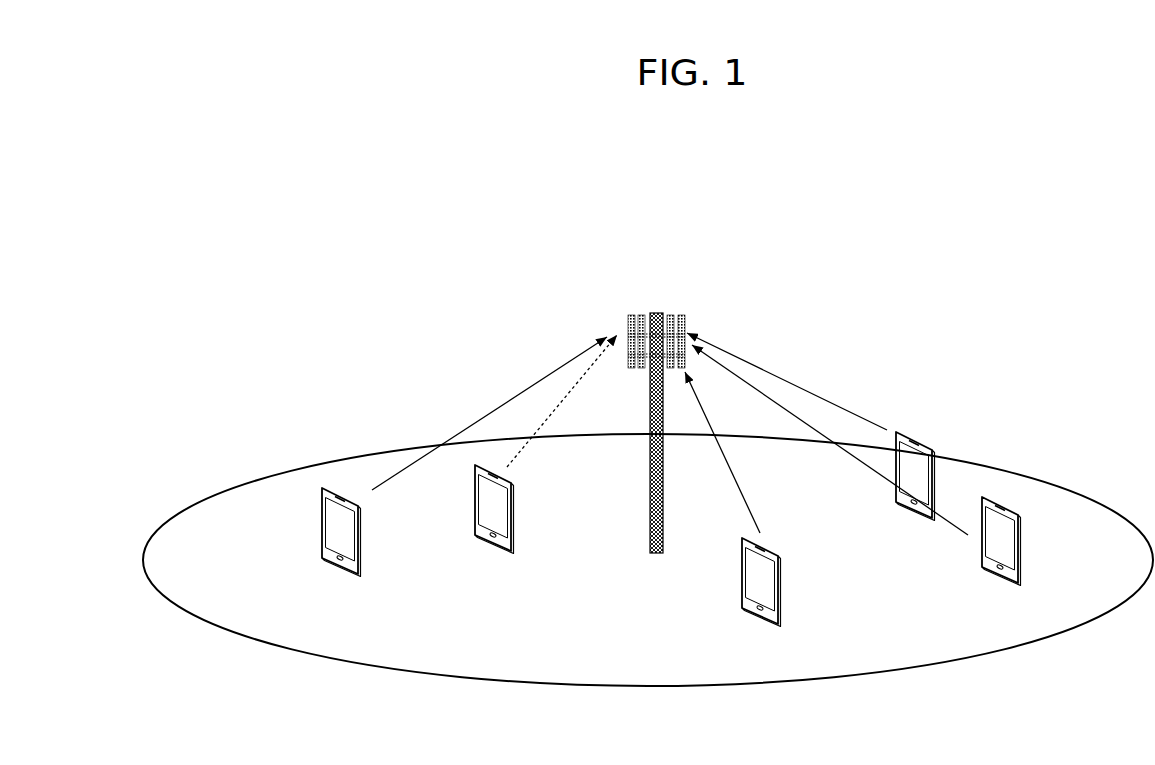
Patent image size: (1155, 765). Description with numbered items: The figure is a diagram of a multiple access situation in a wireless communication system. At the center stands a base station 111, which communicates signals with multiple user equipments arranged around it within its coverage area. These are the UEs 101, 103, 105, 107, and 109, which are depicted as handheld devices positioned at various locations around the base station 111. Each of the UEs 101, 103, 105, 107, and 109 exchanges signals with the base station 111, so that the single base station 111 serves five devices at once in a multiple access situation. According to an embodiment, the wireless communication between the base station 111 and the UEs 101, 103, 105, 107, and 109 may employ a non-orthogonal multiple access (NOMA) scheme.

The UE 101 is at (333, 478).
The UE 103 is at (482, 457).
The UE 105 is at (767, 533).
The UE 107 is at (922, 430).
The UE 109 is at (1000, 493).
The base station 111 is at (660, 313).